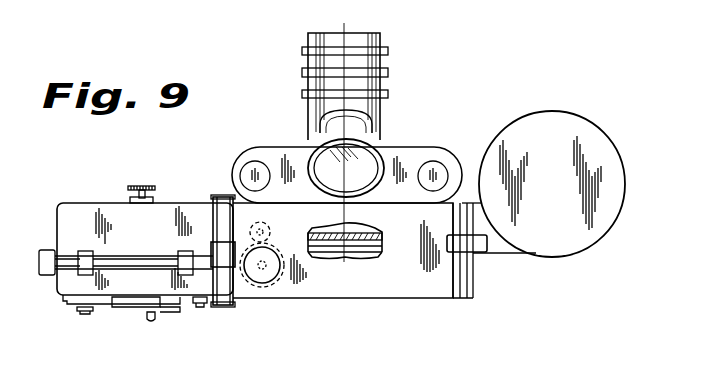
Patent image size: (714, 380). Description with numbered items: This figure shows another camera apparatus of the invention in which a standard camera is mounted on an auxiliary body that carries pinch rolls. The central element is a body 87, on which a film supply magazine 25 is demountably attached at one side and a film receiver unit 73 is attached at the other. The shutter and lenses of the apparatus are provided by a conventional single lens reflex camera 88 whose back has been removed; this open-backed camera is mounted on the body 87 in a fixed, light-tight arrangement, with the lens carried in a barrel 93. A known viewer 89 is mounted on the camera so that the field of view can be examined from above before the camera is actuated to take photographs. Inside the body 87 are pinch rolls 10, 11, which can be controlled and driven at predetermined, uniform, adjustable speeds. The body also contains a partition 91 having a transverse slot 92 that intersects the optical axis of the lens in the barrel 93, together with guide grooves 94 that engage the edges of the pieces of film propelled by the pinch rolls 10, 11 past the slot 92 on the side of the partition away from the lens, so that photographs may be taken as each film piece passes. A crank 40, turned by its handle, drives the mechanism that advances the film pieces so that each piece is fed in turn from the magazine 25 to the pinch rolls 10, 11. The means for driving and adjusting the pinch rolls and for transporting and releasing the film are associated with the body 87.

The pinch roll 10 is at (264, 287).
The pinch roll 11 is at (268, 228).
The film supply magazine 25 is at (96, 200).
The crank 40 is at (127, 308).
The film receiver unit 73 is at (622, 158).
The body 87 is at (405, 298).
The single lens reflex camera 88 is at (403, 148).
The viewer 89 is at (318, 128).
The partition 91 is at (360, 230).
The transverse slot 92 is at (346, 245).
The barrel 93 is at (380, 112).
The guide grooves 94 is at (380, 255).